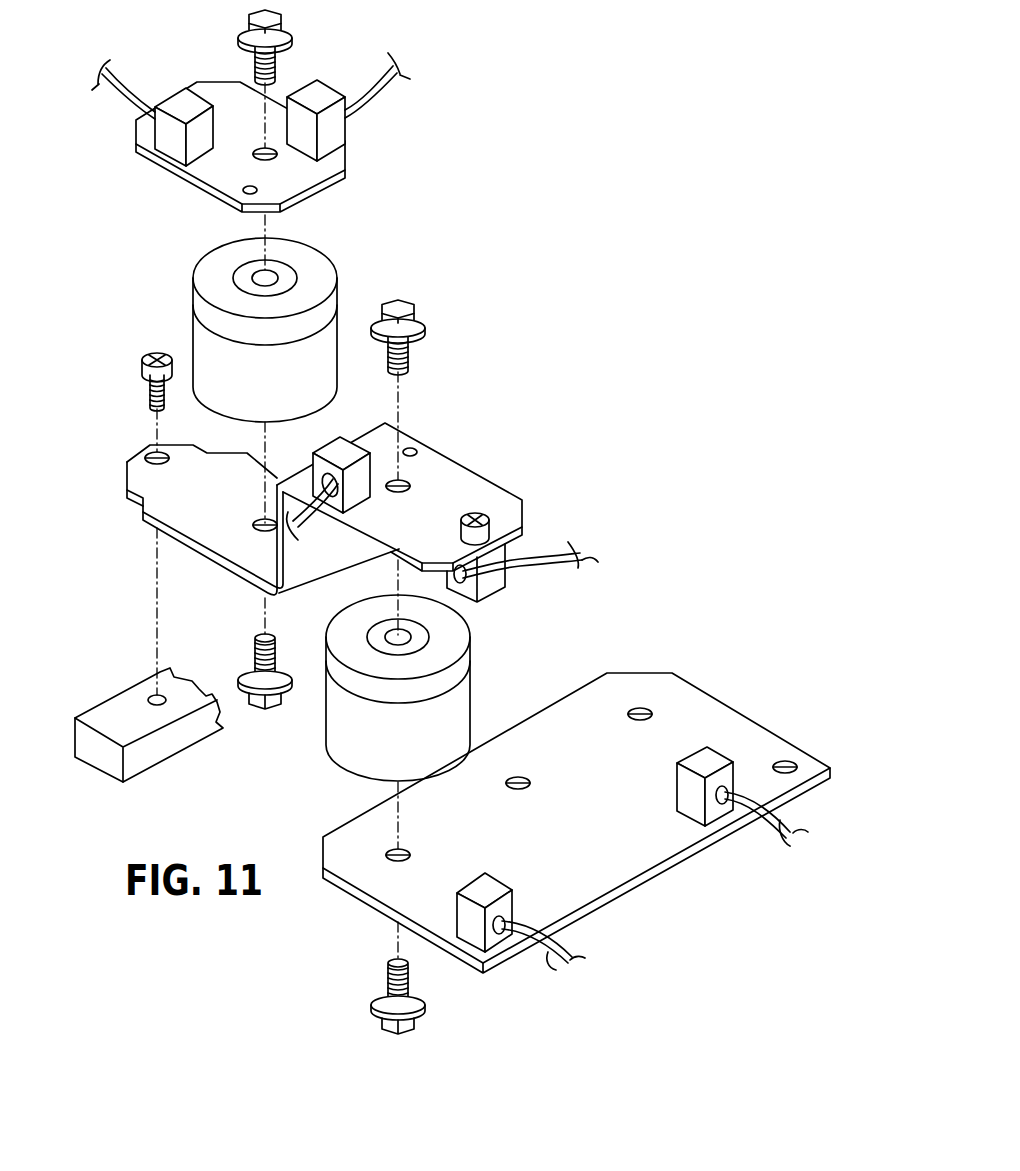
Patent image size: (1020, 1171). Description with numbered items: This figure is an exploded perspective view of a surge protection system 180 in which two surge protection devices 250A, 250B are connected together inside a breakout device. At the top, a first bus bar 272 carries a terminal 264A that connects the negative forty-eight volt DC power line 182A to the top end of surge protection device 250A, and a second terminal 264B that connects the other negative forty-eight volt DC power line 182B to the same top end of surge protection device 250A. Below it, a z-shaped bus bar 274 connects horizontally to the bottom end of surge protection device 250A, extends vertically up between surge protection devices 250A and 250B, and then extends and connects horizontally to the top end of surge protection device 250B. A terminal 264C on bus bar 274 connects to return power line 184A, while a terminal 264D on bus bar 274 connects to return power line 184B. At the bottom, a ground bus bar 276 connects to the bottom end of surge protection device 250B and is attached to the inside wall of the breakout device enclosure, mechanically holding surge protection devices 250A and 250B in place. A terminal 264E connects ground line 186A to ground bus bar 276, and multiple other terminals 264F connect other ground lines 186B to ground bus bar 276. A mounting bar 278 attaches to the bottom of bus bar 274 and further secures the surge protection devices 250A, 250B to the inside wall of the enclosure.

The surge protection system 180 is at (546, 72).
The −48 VDC power line 182A is at (130, 108).
The −48 VDC power line 182B is at (366, 101).
The return power line 184A is at (291, 514).
The return power line 184B is at (552, 557).
The ground line 186A is at (548, 955).
The ground lines 186B is at (770, 827).
The surge protection device 250A is at (193, 298).
The surge protection device 250B is at (473, 681).
The terminal 264A is at (182, 92).
The terminal 264B is at (320, 85).
The terminal 264C is at (353, 438).
The terminal 264D is at (490, 597).
The terminal 264E is at (486, 874).
The terminals 264F is at (677, 787).
The first bus bar 272 is at (350, 153).
The z-shaped bus bar 274 is at (143, 513).
The ground bus bar 276 is at (733, 700).
The mounting bar 278 is at (102, 770).